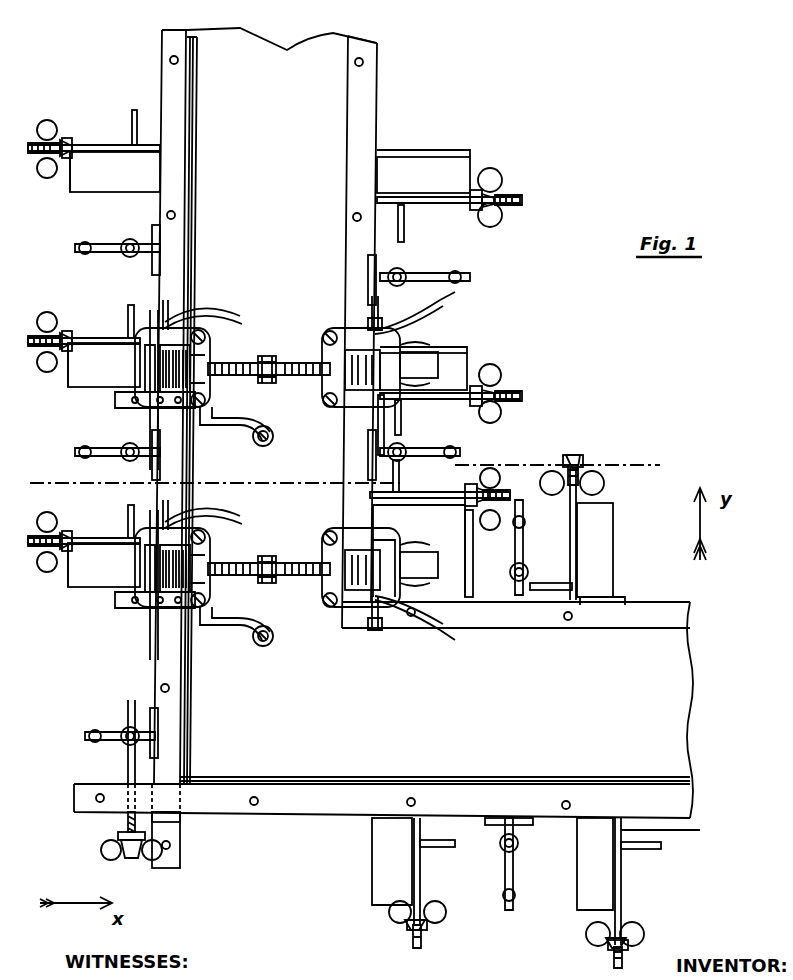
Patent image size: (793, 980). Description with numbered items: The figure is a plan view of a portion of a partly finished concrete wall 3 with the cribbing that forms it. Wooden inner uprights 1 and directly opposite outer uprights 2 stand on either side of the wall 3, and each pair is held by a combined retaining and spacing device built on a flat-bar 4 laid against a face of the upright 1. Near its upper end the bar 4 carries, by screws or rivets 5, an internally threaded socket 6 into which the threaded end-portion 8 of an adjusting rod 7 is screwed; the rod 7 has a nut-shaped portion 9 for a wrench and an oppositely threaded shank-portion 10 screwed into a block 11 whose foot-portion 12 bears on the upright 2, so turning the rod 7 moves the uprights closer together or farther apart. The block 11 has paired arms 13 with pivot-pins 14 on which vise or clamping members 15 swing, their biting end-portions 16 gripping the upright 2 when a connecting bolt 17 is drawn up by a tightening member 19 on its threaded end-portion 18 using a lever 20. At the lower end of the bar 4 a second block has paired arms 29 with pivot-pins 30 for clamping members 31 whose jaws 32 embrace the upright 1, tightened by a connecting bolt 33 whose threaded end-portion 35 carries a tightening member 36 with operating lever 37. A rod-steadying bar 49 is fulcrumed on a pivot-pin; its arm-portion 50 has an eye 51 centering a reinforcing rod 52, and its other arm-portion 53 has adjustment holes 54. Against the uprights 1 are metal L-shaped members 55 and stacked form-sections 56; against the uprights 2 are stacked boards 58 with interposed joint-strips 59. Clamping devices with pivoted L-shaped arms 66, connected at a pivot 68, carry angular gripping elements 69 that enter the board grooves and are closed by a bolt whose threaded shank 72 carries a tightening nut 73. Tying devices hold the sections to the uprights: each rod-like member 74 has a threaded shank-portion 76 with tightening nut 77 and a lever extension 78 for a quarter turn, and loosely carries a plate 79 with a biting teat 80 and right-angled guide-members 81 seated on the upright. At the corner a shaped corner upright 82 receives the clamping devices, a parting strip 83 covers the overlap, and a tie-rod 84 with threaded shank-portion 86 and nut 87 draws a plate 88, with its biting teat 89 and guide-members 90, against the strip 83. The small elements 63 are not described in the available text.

The uprights 1 is at (442, 170).
The uprights 2 is at (86, 188).
The wall 3 is at (308, 48).
The plate-like member or flat-bar 4 is at (417, 471).
The screws or rivets 5 is at (350, 392).
The internally screw-threaded socket 6 is at (300, 380).
The adjusting rod 7 is at (273, 456).
The screw-threaded end-portion 8 is at (281, 458).
The nut-shaped portion 9 is at (265, 356).
The screw-threaded shank-portion 10 is at (219, 464).
The block 11 is at (192, 368).
The foot-portion 12 is at (172, 372).
The arms 13 is at (208, 337).
The pivot-pins 14 is at (226, 608).
The vise or clamping members 15 is at (152, 470).
The clamping or biting end-portions 16 is at (122, 469).
The connecting bolt 17 is at (143, 469).
The screw-threaded end-portion 18 is at (172, 318).
The tightening member 19 is at (202, 406).
The operating lever 20 is at (214, 409).
The arms 29 is at (326, 340).
The pivot-pins 30 is at (335, 335).
The vise or clamping members 31 is at (352, 330).
The clamping or biting end-portions 32 is at (423, 455).
The connecting bolt 33 is at (363, 425).
The screw-threaded end-portion 35 is at (368, 320).
The tightening member 36 is at (397, 484).
The operating lever 37 is at (445, 303).
The rod-steadying bar or plate 49 is at (228, 428).
The arm-portion 50 is at (241, 544).
The eye 51 is at (278, 532).
The reinforcing rod 52 is at (266, 556).
The arm-portion 53 is at (115, 402).
The holes or perforations 54 is at (150, 405).
The angular or L-shaped members 55 is at (390, 155).
The form-sections or members 56 is at (352, 140).
The form-sections or members 58 is at (176, 149).
The joint-strips 59 is at (194, 108).
The screw 63 is at (170, 60).
The L-shaped members or arms 66 is at (75, 248).
The pivotal connection 68 is at (83, 254).
The gripping elements 69 is at (162, 240).
The screw-threaded shank-portions 72 is at (124, 256).
The tightening nut 73 is at (126, 242).
The rod-like member 74 is at (115, 145).
The screw-threaded shank-portion 76 is at (38, 140).
The tightening nut 77 is at (54, 124).
The extension 78 is at (135, 112).
The plate 79 is at (50, 176).
The biting teat or projection 80 is at (76, 184).
The right-angled guide-members 81 is at (82, 146).
The corner upright 82 is at (485, 553).
The parting strip 83 is at (180, 817).
The tie-rod 84 is at (128, 755).
The screw-threaded shank-portion 86 is at (131, 858).
The tightening nut 87 is at (104, 858).
The plate 88 is at (118, 836).
The biting teat or projection 89 is at (180, 848).
The guide-members 90 is at (126, 822).